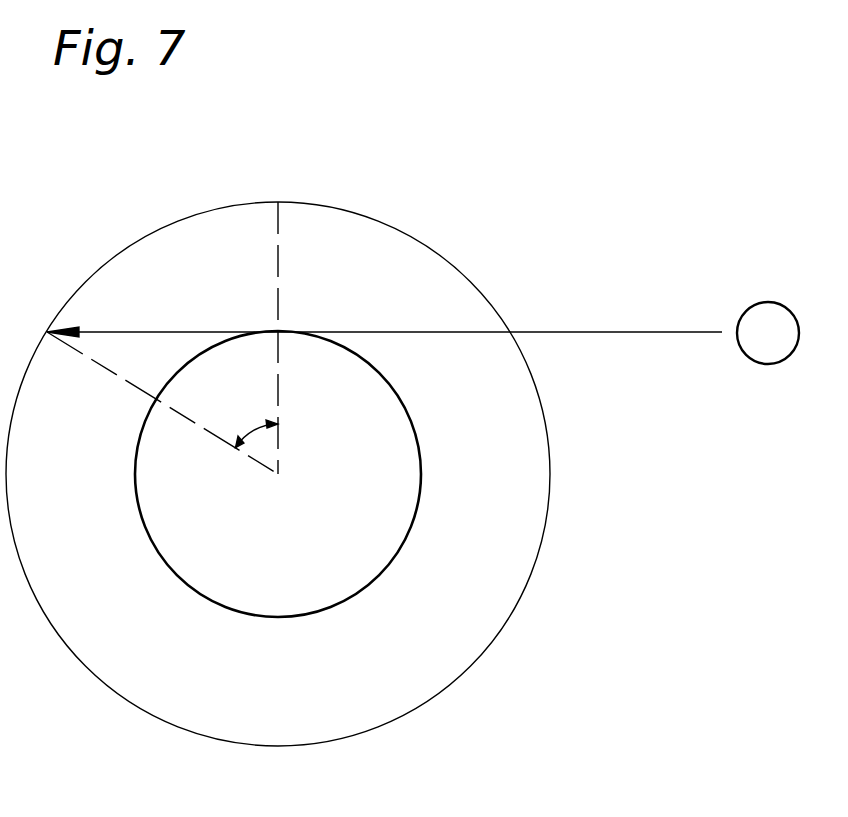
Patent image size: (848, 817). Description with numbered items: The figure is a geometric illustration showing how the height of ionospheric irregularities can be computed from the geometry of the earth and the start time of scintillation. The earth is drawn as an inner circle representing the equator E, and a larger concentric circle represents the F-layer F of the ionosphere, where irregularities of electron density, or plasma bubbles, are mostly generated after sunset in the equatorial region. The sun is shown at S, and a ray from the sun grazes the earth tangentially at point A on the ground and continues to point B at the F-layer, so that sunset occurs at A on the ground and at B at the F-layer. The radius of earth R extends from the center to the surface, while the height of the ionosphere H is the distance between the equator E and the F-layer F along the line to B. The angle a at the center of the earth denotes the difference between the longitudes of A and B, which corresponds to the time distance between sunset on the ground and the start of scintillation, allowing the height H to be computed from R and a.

The F-layer F is at (95, 676).
The equator E is at (378, 575).
The sun S is at (759, 364).
The point A is at (384, 319).
The point B is at (53, 325).
The radius of earth R is at (243, 338).
The height of the ionosphere H is at (162, 403).
The difference between longitudes of A and B a is at (256, 423).